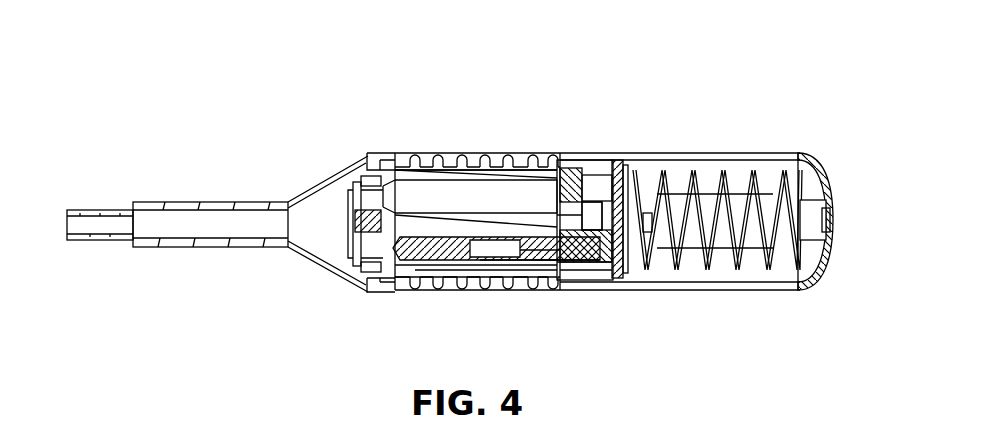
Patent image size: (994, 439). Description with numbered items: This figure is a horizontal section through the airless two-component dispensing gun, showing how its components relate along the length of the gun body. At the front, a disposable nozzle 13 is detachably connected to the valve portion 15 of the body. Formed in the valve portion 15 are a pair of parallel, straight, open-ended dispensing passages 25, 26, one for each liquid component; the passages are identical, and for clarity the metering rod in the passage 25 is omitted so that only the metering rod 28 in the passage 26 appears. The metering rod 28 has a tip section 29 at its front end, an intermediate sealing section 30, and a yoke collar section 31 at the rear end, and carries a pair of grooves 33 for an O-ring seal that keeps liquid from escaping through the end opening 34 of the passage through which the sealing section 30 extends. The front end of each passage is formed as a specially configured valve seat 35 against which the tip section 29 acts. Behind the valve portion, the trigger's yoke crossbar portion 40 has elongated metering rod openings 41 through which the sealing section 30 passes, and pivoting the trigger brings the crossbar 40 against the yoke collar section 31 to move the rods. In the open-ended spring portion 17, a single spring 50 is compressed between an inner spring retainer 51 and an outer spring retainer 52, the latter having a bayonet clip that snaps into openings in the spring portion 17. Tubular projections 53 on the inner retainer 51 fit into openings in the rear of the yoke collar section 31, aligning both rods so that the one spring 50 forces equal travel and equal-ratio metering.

The nozzle 13 is at (218, 202).
The valve portion 15 is at (465, 134).
The spring portion 17 is at (757, 153).
The dispensing passage 25 is at (450, 203).
The dispensing passage 26 is at (432, 266).
The metering rod 28 is at (461, 233).
The tip section 29 is at (383, 268).
The intermediate sealing section 30 is at (528, 248).
The yoke collar section 31 is at (598, 276).
The grooves 33 is at (529, 264).
The end opening 34 is at (559, 195).
The valve seat 35 is at (413, 158).
The yoke crossbar portion 40 is at (538, 250).
The metering rod openings 41 is at (584, 190).
The spring 50 is at (737, 270).
The inner spring retainer 51 is at (673, 260).
The outer spring retainer 52 is at (818, 182).
The tubular projections 53 is at (595, 195).